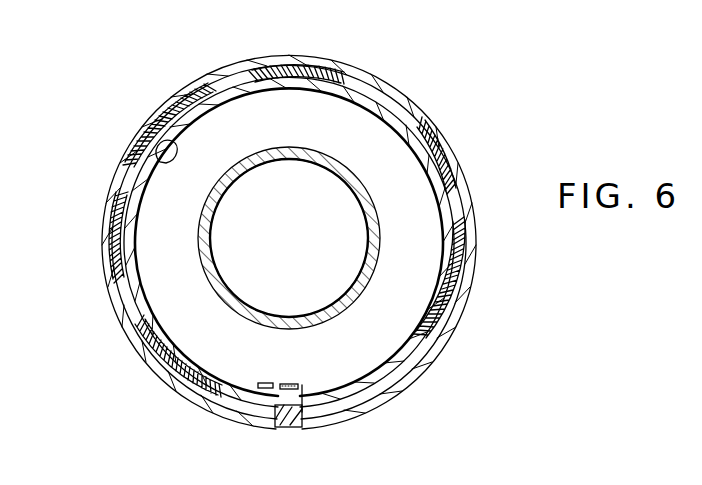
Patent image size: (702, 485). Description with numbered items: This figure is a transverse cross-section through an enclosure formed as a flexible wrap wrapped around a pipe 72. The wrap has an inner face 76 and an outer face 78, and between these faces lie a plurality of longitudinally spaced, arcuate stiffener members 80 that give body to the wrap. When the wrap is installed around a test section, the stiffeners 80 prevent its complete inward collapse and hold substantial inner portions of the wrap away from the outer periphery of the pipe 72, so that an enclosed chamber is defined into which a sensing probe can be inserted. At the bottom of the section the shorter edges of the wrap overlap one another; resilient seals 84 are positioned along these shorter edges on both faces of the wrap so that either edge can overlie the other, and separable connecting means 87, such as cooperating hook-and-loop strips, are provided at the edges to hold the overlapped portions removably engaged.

The pipe 72 is at (200, 213).
The inner face 76 is at (163, 160).
The outer face 78 is at (108, 207).
The arcuate stiffener members 80 is at (170, 125).
The seals 84 is at (260, 385).
The separable connecting means 87 is at (300, 383).